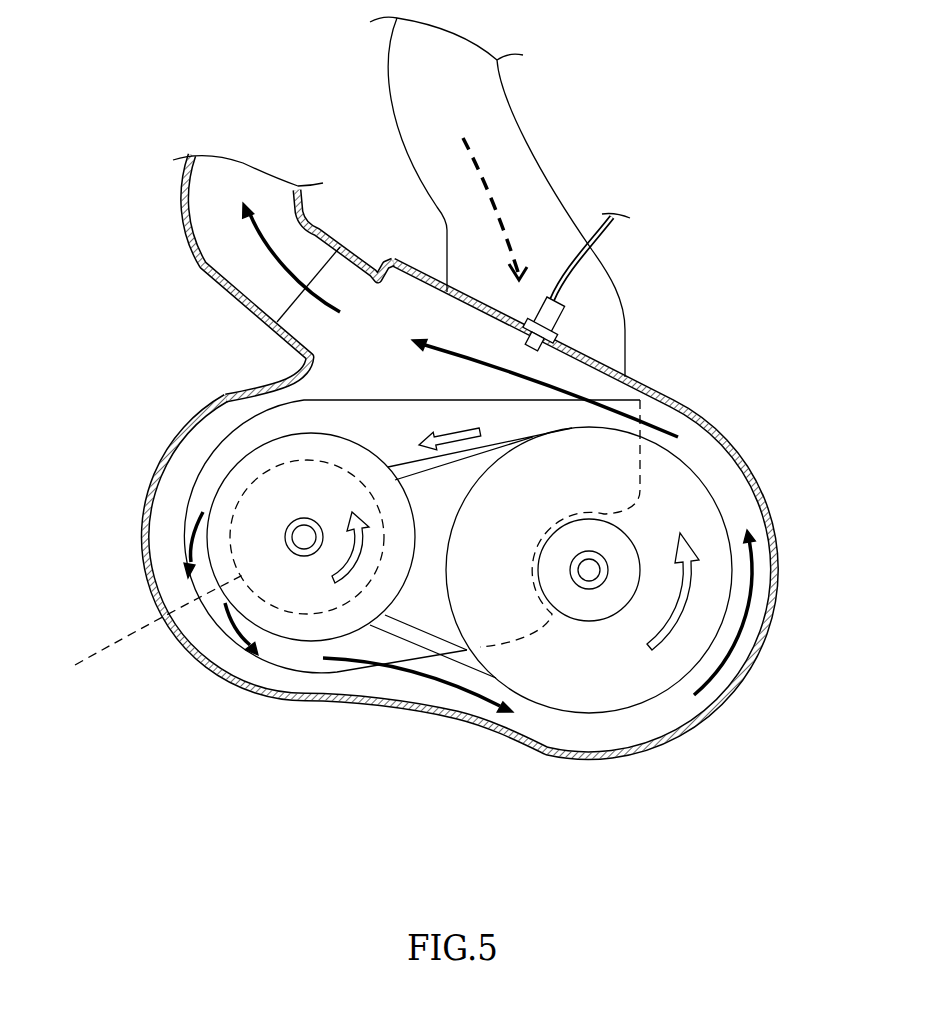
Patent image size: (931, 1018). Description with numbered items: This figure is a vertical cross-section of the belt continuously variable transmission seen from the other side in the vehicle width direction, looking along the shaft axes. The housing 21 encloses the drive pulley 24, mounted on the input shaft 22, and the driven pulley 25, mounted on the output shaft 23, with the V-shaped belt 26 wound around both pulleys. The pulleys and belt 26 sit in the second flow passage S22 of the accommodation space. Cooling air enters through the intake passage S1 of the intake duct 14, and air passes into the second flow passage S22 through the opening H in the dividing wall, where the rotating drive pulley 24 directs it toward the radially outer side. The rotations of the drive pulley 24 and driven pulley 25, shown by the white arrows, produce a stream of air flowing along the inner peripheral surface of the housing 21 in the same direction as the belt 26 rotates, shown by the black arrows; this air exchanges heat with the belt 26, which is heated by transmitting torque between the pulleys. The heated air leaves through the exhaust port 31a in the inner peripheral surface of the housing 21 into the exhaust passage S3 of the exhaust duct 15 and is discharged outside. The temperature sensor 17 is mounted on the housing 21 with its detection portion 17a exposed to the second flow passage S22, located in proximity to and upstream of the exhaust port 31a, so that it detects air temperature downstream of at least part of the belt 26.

The intake duct 14 is at (507, 110).
The intake passage S1 is at (517, 173).
The exhaust duct 15 is at (182, 190).
The exhaust passage S3 is at (202, 223).
The exhaust port 31a is at (302, 323).
The temperature sensor 17 is at (557, 316).
The detection portion 17a is at (547, 350).
The housing 21 is at (747, 460).
The input shaft 22 is at (292, 527).
The opening H is at (211, 570).
The drive pulley 24 is at (288, 643).
The belt 26 is at (430, 643).
The second flow passage S22 is at (537, 727).
The output shaft 23 is at (583, 590).
The driven pulley 25 is at (665, 698).